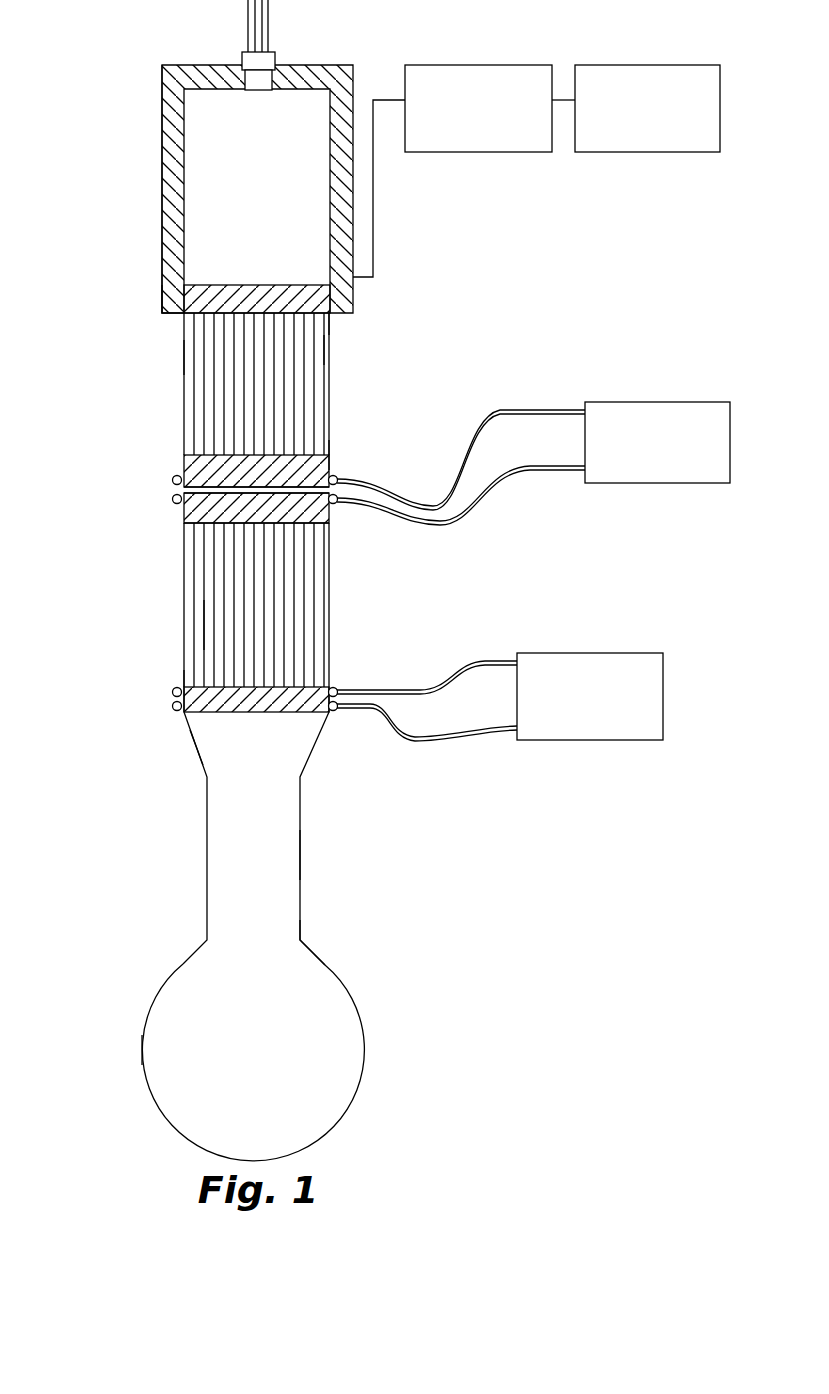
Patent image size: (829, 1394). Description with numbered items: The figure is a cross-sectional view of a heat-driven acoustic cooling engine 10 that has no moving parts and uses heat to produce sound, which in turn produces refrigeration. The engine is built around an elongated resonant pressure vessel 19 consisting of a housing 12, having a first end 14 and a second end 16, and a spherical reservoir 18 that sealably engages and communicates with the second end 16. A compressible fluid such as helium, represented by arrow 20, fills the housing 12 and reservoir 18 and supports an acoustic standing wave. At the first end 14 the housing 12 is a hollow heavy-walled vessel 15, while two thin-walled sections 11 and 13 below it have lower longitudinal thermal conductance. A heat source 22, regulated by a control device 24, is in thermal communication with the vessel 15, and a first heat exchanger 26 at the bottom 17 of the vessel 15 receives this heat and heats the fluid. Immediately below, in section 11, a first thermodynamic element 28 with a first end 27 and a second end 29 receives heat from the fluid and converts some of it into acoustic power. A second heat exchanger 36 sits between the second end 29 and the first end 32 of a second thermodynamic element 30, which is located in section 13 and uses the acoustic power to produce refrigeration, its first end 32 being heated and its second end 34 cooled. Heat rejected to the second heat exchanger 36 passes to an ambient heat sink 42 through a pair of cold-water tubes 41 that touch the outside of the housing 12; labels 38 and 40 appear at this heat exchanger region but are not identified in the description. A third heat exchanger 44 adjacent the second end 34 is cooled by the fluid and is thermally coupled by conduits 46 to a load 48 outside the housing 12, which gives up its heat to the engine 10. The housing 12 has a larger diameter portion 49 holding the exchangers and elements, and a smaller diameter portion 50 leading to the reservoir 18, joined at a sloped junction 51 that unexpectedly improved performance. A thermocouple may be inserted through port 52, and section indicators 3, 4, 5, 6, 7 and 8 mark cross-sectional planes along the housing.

The section line 3- 3 is at (162, 300).
The section line 4- 4 is at (184, 377).
The section line 5- 5 is at (184, 470).
The section line 6- 6 is at (184, 510).
The section line 7- 7 is at (184, 602).
The section line 8- 8 is at (176, 697).
The heat-driven acoustic cooling engine 10 is at (206, 835).
The thin-walled section 11 is at (184, 423).
The housing 12 is at (302, 803).
The thin-walled section 13 is at (331, 568).
The first end 14 is at (163, 97).
The heavy-walled vessel 15 is at (163, 181).
The second end 16 is at (300, 937).
The bottom 17 is at (164, 288).
The reservoir 18 is at (366, 1025).
The resonant pressure vessel 19 is at (141, 1047).
The compressible fluid 20 is at (254, 858).
The heat source 22 is at (462, 144).
The control device 24 is at (631, 140).
The first heat exchanger 26 is at (274, 300).
The first end 27 is at (331, 322).
The first thermodynamic element 28 is at (331, 350).
The second end 29 is at (331, 456).
The second thermodynamic element 30 is at (203, 622).
The first end 32 is at (184, 530).
The second end 34 is at (184, 682).
The second heat exchanger 36 is at (182, 456).
The heat exchanger junction 38 is at (331, 470).
The ambient heat exchanger 40 is at (184, 513).
The tubes 41 is at (173, 481).
The ambient heat sink 42 is at (641, 480).
The third heat exchanger 44 is at (236, 713).
The conduits 46 is at (335, 688).
The load 48 is at (574, 724).
The larger diameter portion 49 is at (184, 357).
The smaller diameter portion 50 is at (300, 853).
The junction 51 is at (200, 757).
The port 52 is at (270, 22).